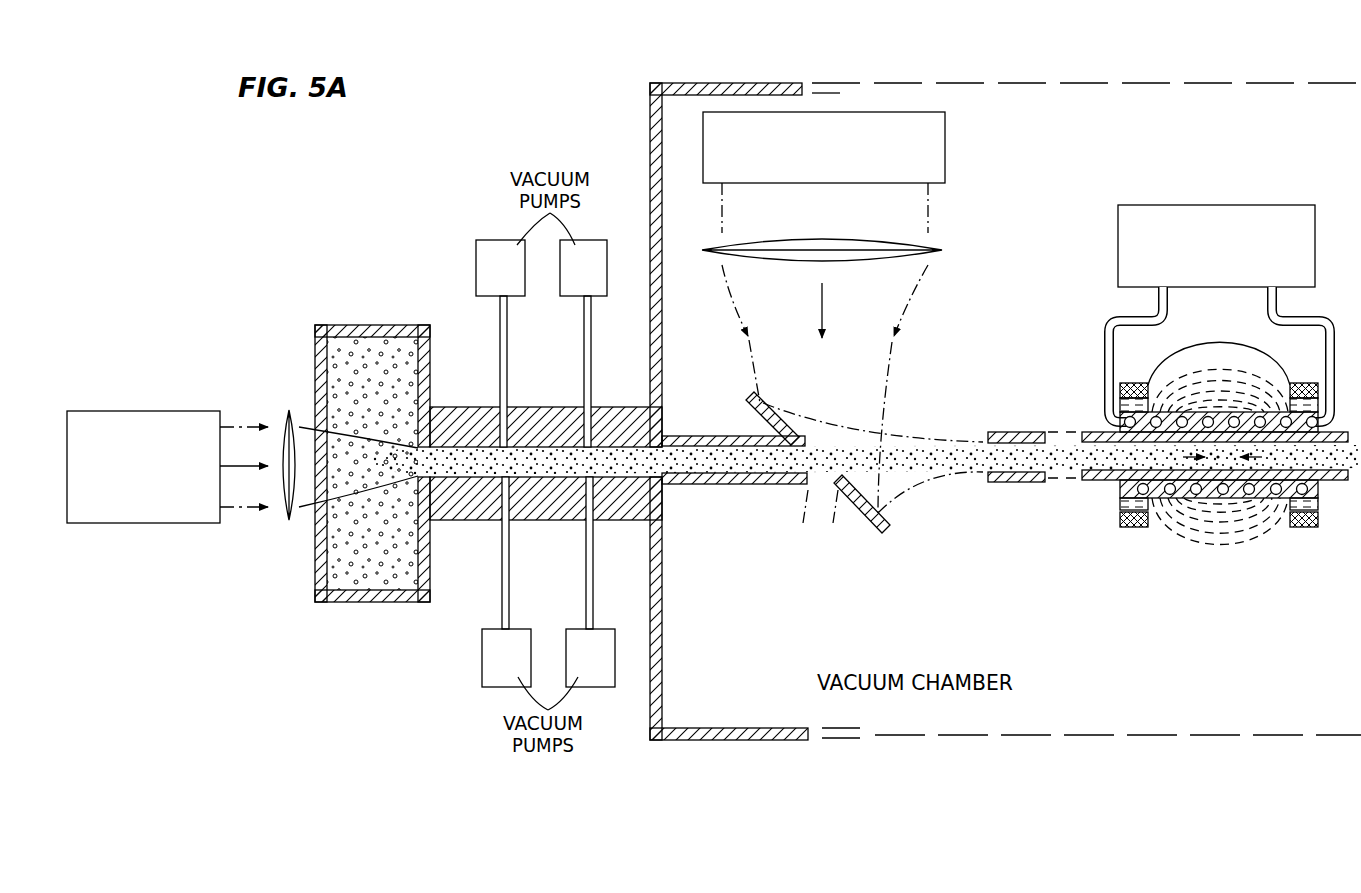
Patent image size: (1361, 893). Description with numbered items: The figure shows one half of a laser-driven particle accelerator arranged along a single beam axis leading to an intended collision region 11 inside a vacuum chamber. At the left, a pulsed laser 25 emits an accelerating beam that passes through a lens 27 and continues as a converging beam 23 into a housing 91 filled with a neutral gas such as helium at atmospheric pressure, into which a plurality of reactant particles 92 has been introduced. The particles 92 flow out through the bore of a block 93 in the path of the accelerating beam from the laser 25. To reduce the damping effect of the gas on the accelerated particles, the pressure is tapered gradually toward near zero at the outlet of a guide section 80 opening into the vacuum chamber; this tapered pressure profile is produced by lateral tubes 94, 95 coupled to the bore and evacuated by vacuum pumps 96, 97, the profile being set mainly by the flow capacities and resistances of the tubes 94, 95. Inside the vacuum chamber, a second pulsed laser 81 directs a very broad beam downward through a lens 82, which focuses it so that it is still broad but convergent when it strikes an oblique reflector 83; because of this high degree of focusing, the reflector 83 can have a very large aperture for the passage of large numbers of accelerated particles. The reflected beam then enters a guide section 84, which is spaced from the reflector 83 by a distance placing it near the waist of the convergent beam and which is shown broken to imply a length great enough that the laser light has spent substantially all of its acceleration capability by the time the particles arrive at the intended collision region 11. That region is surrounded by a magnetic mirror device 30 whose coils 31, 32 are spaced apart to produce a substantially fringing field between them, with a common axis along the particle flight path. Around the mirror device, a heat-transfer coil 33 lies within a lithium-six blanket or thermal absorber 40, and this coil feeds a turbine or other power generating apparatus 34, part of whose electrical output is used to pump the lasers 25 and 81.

The intended collision region 11 is at (1218, 460).
The laser beam 23 is at (322, 505).
The laser 25 is at (142, 411).
The focusing lens 27 is at (288, 410).
The magnetic mirror device 30 is at (1208, 331).
The coil 31 is at (1137, 527).
The coil 32 is at (1308, 527).
The heat-transfer coil 33 is at (1142, 488).
The power generating apparatus 34 is at (1118, 240).
The thermal absorber 40 is at (1302, 434).
The guide section 80 is at (743, 486).
The laser 81 is at (945, 150).
The lens 82 is at (942, 250).
The oblique reflector 83 is at (752, 398).
The guide section 84 is at (1010, 432).
The housing 91 is at (352, 602).
The reactant particles 92 is at (399, 572).
The block 93 is at (475, 520).
The lateral tube 94 is at (498, 430).
The lateral tube 95 is at (583, 425).
The vacuum pump 96 is at (485, 257).
The vacuum pump 97 is at (597, 260).